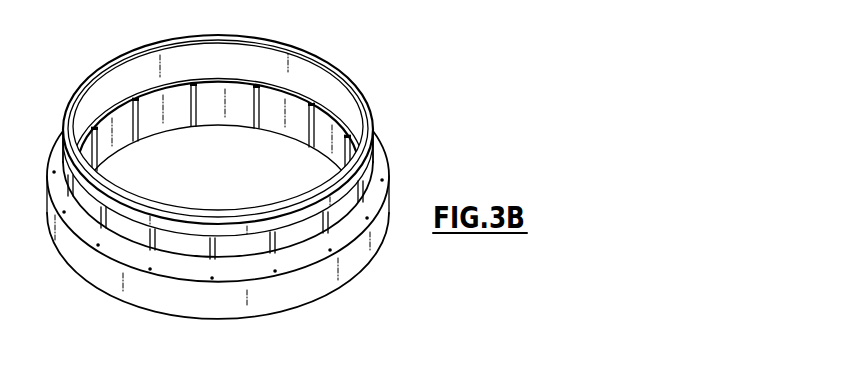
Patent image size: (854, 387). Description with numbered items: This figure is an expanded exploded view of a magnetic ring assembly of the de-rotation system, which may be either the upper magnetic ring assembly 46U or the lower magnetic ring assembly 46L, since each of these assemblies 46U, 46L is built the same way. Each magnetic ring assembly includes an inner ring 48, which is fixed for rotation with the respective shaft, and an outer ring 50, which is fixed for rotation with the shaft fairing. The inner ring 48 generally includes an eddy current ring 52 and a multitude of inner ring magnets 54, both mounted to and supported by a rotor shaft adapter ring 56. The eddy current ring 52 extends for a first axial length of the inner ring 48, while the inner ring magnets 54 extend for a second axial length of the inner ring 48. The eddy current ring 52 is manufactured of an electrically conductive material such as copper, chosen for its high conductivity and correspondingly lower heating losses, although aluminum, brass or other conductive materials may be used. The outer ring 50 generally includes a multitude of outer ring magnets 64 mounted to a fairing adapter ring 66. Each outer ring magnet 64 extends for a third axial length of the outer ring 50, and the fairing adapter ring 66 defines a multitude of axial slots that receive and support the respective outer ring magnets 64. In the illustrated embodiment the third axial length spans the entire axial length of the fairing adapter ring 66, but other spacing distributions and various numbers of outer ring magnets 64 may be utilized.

The upper magnetic ring assembly 46U is at (441, 169).
The lower magnetic ring assembly 46L is at (252, 164).
The inner ring 48 is at (356, 53).
The outer ring 50 is at (399, 275).
The eddy current ring 52 is at (367, 97).
The inner ring magnets 54 is at (276, 246).
The rotor shaft adapter ring 56 is at (233, 60).
The outer ring magnets 64 is at (194, 122).
The fairing adapter ring 66 is at (285, 119).